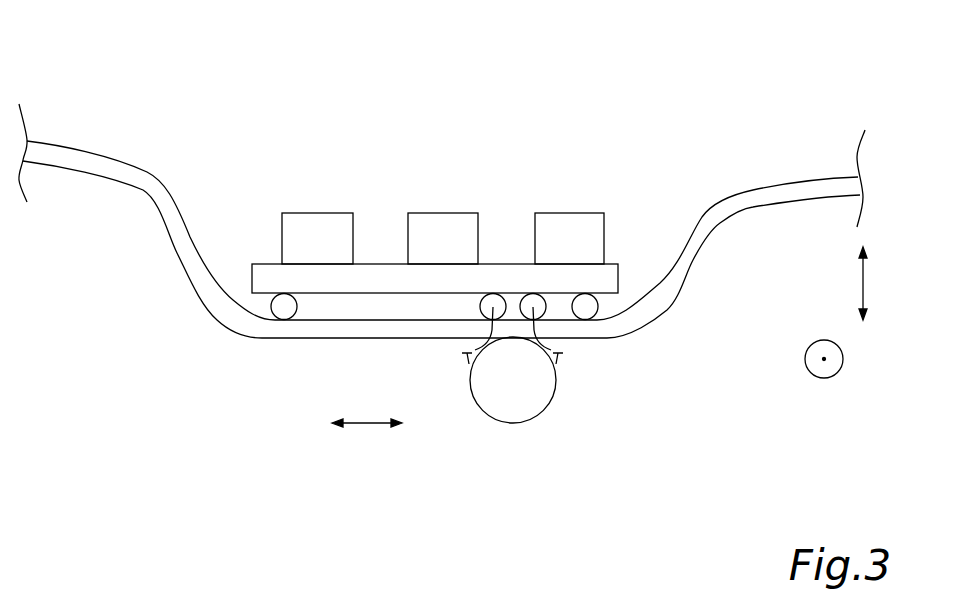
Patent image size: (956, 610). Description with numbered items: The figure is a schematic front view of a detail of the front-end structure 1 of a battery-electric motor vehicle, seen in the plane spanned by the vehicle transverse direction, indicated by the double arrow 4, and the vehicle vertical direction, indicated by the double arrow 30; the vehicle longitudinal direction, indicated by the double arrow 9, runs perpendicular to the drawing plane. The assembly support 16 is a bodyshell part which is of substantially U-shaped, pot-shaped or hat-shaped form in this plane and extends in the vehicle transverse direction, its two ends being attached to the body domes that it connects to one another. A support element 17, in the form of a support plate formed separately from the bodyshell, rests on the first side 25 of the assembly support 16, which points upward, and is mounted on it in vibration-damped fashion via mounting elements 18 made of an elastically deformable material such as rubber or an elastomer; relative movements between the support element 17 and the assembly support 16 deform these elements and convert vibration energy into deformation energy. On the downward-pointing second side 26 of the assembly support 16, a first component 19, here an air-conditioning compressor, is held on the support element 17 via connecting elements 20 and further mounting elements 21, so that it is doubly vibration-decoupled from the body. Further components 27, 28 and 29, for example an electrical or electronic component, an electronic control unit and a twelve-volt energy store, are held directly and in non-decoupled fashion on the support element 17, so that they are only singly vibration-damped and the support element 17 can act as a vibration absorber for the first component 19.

The front-end structure 1 is at (736, 265).
The double arrow 4 is at (368, 423).
The double arrow 9 is at (843, 359).
The assembly support 16 is at (678, 314).
The support element 17 is at (413, 280).
The mounting elements 18 is at (284, 307).
The first component 19 is at (513, 423).
The connecting elements 20 is at (467, 353).
The further mounting elements 21 is at (490, 300).
The first side 25 is at (235, 240).
The second side 26 is at (236, 350).
The further component 27 is at (315, 213).
The further component 28 is at (441, 213).
The further component 29 is at (587, 213).
The double arrow 30 is at (863, 283).